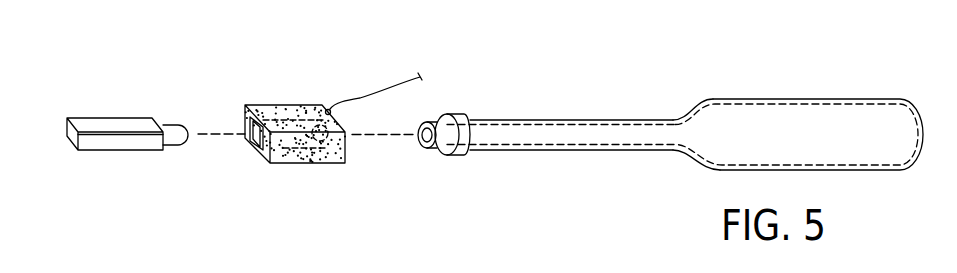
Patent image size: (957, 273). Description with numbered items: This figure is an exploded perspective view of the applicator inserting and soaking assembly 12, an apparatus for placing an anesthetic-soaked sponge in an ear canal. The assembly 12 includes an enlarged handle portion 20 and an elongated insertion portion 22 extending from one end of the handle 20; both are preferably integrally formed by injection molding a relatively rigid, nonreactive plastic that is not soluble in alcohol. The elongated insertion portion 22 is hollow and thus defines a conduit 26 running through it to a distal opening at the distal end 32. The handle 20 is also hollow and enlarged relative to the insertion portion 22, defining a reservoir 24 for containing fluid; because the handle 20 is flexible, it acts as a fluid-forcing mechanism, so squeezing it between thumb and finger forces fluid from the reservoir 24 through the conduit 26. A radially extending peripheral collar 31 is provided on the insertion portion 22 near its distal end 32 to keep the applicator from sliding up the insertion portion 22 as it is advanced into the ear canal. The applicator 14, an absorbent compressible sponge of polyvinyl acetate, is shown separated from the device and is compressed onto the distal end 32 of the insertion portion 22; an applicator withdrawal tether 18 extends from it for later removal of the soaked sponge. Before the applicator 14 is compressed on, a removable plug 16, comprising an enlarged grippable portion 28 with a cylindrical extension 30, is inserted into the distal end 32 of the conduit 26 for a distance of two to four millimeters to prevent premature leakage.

The applicator inserting and soaking assembly 12 is at (738, 92).
The applicator 14 is at (284, 170).
The removable plug 16 is at (86, 111).
The applicator withdrawal tether 18 is at (360, 98).
The handle portion 20 is at (717, 170).
The insertion portion 22 is at (535, 150).
The reservoir 24 is at (832, 140).
The conduit 26 is at (526, 122).
The enlarged grippable portion 28 is at (125, 125).
The cylindrical extension 30 is at (173, 140).
The peripheral collar 31 is at (450, 114).
The distal end 32 is at (415, 144).